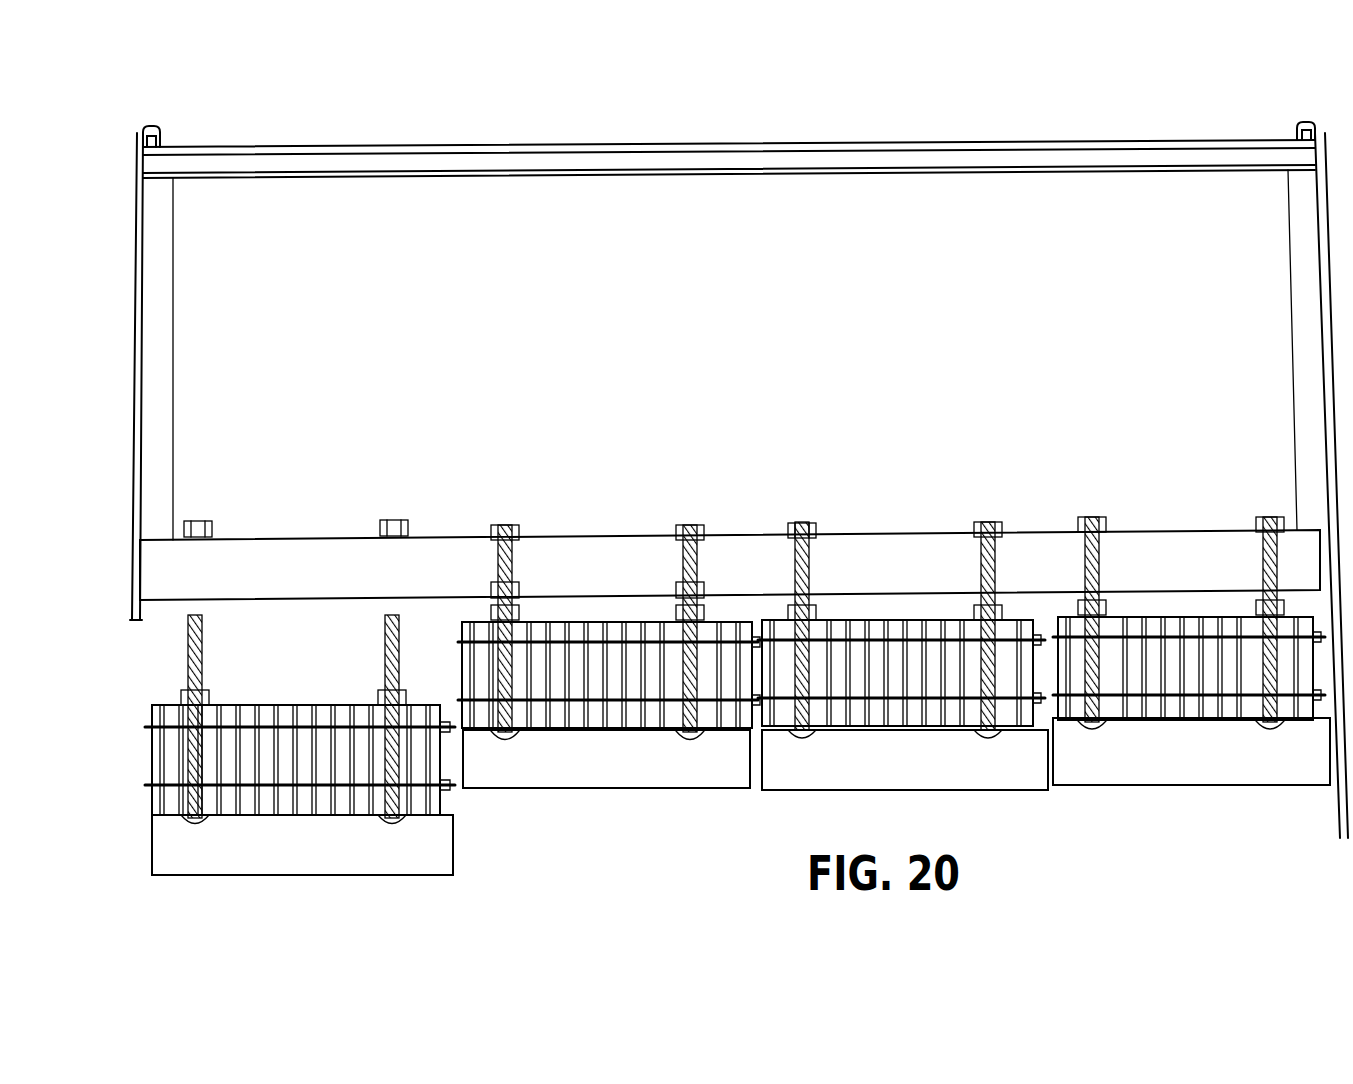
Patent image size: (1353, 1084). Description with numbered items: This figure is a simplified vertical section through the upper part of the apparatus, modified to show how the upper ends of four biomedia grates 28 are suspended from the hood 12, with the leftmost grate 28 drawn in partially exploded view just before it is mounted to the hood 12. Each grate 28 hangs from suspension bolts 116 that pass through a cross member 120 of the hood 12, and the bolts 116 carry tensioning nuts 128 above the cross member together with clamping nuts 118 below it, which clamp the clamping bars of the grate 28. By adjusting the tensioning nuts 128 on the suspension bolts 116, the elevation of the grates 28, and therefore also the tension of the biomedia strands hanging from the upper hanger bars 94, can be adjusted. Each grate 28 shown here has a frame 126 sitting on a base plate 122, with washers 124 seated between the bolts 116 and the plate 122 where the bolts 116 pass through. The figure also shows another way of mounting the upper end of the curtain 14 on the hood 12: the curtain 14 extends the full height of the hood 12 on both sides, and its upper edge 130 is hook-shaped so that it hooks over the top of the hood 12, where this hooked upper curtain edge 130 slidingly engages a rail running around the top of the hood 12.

The hood 12 is at (636, 145).
The curtain 14 is at (133, 610).
The grate 28 is at (548, 793).
The upper hanger bar 94 is at (770, 790).
The suspension bolt 116 is at (203, 650).
The clamping nut 118 is at (185, 700).
The cross beam 120 is at (306, 570).
The base plate 122 is at (455, 830).
The washer 124 is at (196, 820).
The tine cage 126 is at (290, 705).
The tensioning nut 128 is at (380, 528).
The upper edge of the curtain 130 is at (160, 126).